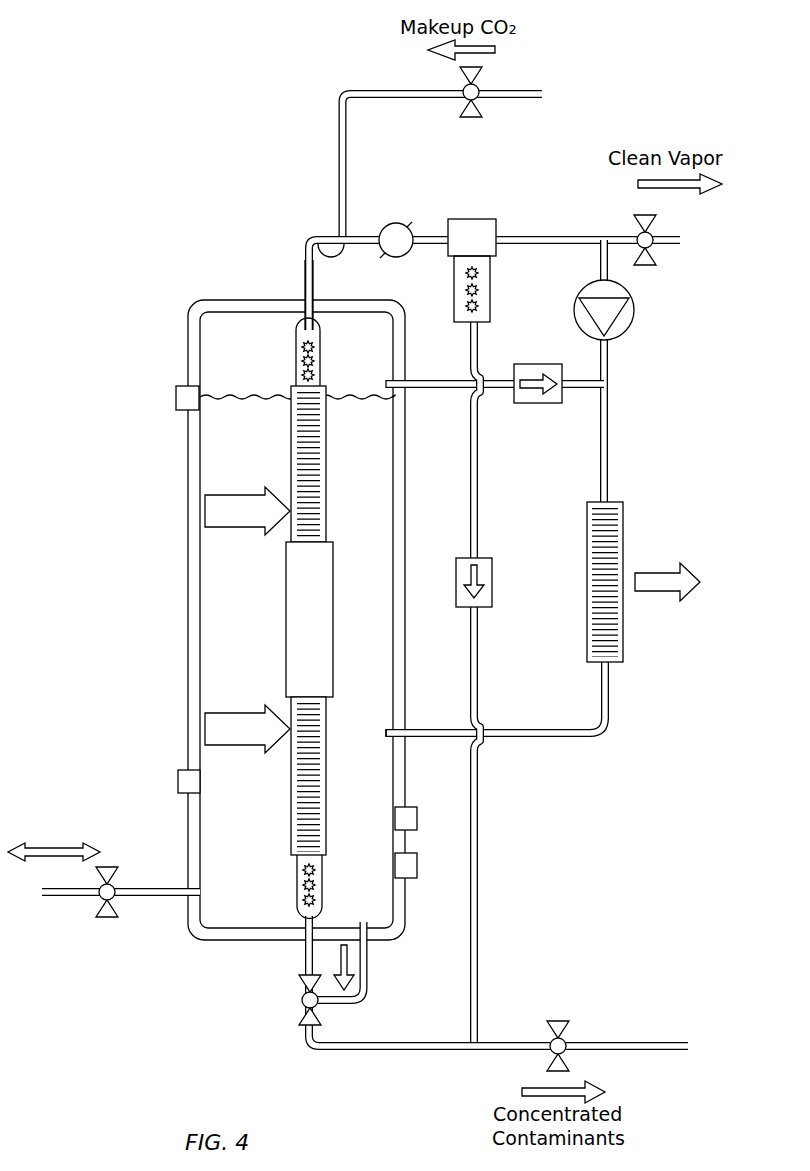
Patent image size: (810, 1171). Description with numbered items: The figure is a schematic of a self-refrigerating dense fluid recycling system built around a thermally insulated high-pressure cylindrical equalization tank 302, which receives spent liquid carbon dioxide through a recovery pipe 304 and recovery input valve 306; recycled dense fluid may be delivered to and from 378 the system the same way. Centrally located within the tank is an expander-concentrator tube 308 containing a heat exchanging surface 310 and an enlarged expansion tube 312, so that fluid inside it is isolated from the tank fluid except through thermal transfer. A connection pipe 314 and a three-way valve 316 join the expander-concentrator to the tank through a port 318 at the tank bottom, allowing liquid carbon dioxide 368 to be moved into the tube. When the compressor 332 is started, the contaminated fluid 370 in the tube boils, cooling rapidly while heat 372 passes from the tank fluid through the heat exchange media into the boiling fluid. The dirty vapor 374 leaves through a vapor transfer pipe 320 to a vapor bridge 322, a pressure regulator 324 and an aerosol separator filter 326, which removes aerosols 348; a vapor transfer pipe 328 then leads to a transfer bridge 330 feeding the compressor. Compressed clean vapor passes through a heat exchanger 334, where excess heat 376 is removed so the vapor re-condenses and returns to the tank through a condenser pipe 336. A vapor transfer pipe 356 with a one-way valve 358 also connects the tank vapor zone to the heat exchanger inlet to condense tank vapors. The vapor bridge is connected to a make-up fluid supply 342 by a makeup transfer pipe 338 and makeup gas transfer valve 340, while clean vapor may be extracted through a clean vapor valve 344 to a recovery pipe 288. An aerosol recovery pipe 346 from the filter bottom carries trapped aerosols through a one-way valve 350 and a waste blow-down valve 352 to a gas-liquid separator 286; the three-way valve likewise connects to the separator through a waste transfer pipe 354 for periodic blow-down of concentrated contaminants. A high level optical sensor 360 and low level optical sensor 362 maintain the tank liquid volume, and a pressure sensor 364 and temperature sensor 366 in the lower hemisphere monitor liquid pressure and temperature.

The gas-liquid separator 286 is at (735, 1035).
The recovery pipe 288 is at (742, 262).
The equalization tank 302 is at (187, 605).
The recovery pipe 304 is at (163, 898).
The recovery input valve 306 is at (107, 920).
The expander-concentrator tube 308 is at (343, 557).
The heat exchanging surface 310 is at (325, 470).
The enlarged expansion tube 312 is at (295, 574).
The connection pipe 314 is at (367, 962).
The 3-way valve 316 is at (297, 1013).
The port 318 is at (351, 925).
The vapor transfer pipe 320 is at (305, 275).
The vapor bridge 322 is at (318, 239).
The pressure regulator 324 is at (396, 225).
The aerosol separator filter 326 is at (462, 218).
The vapor transfer pipe 328 is at (527, 235).
The transfer bridge 330 is at (598, 235).
The compressor 332 is at (620, 322).
The heat exchanger 334 is at (625, 628).
The condenser pipe 336 is at (538, 730).
The makeup transfer pipe 338 is at (339, 135).
The makeup gas transfer valve 340 is at (470, 113).
The make-up fluid supply 342 is at (600, 82).
The clean vapor valve 344 is at (651, 254).
The aerosol recovery pipe 346 is at (480, 487).
The aerosols 348 is at (489, 311).
The one-way valve 350 is at (487, 572).
The waste blow-down valve 352 is at (556, 1028).
The waste transfer pipe 354 is at (400, 1043).
The vapor transfer pipe 356 is at (432, 390).
The one-way valve 358 is at (532, 398).
The high level optical sensor 360 is at (183, 412).
The low level optical sensor 362 is at (183, 793).
The pressure sensor 364 is at (412, 809).
The temperature sensor 366 is at (412, 859).
The liquid carbon dioxide 368 is at (360, 727).
The contaminated fluid 370 is at (297, 880).
The heat 372 is at (207, 510).
The dirty vapor 374 is at (325, 372).
The excess heat 376 is at (660, 577).
The delivery to and from 378 is at (95, 843).